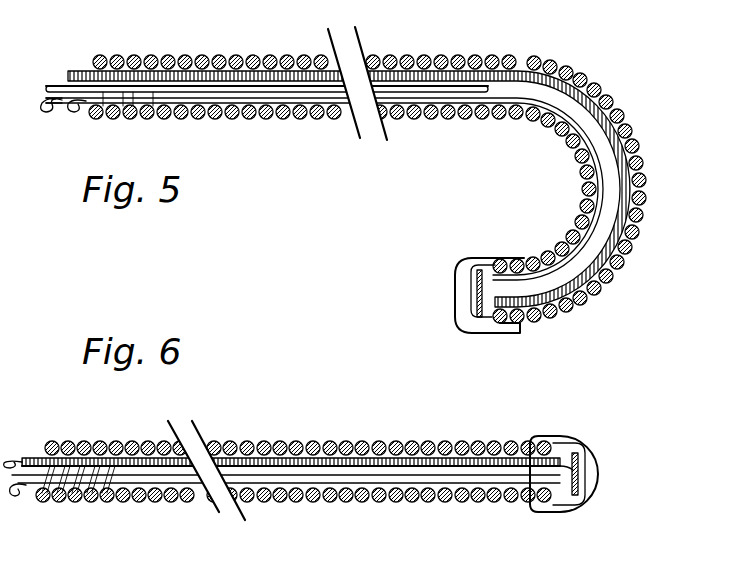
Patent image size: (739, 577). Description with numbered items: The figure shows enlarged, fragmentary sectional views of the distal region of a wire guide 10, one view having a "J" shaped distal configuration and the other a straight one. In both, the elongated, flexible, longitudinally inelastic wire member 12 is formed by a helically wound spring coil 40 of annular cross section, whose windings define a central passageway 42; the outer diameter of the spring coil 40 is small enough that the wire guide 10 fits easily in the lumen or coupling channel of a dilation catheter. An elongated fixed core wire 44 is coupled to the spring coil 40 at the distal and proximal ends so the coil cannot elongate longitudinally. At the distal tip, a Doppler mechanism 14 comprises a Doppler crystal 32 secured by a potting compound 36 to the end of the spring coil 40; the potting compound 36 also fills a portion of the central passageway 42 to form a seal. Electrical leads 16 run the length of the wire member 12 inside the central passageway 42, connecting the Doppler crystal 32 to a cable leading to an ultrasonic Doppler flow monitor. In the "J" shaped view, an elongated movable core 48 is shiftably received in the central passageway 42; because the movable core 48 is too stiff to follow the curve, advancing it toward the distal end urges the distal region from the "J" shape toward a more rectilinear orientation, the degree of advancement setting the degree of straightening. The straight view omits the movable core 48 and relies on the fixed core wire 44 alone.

In FIG. 5, the wire guide 10 is at (146, 33).
In FIG. 5, the wire member 12 is at (654, 157).
In FIG. 6, the Doppler mechanism 14 is at (606, 498).
In FIG. 5, the electrical leads 16 is at (612, 202).
In FIG. 6, the electrical leads 16 is at (366, 476).
In FIG. 6, the Doppler crystal 32 is at (580, 470).
In FIG. 6, the potting compound 36 is at (590, 476).
In FIG. 5, the spring coil 40 is at (484, 60).
In FIG. 6, the spring coil 40 is at (186, 502).
In FIG. 5, the central passageway 42 is at (602, 98).
In FIG. 6, the central passageway 42 is at (300, 472).
In FIG. 5, the fixed core wire 44 is at (78, 68).
In FIG. 6, the fixed core wire 44 is at (33, 458).
In FIG. 5, the movable core 48 is at (415, 90).